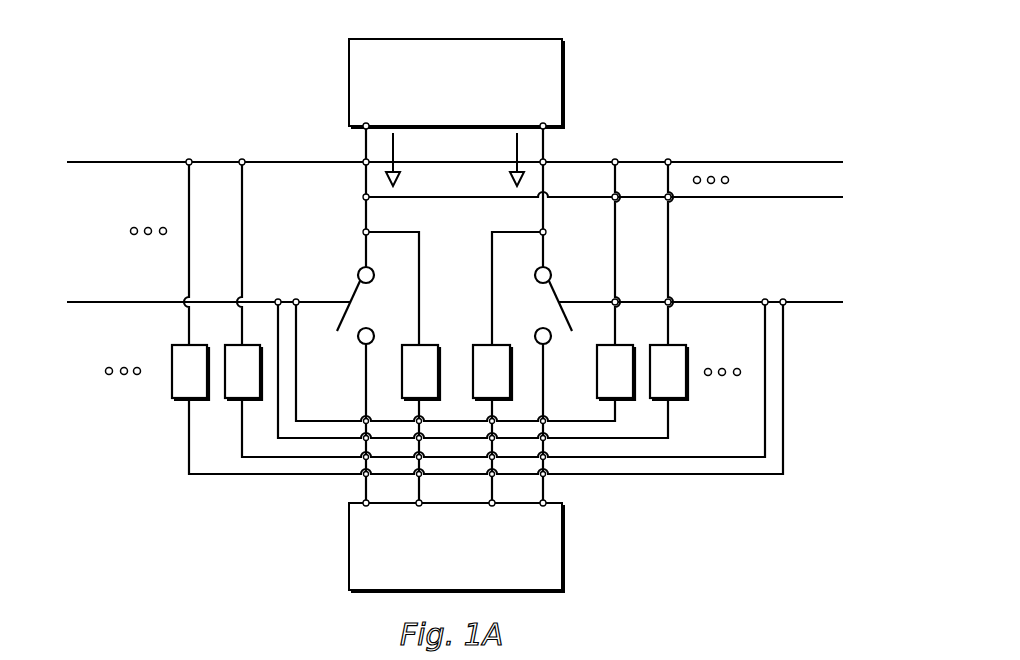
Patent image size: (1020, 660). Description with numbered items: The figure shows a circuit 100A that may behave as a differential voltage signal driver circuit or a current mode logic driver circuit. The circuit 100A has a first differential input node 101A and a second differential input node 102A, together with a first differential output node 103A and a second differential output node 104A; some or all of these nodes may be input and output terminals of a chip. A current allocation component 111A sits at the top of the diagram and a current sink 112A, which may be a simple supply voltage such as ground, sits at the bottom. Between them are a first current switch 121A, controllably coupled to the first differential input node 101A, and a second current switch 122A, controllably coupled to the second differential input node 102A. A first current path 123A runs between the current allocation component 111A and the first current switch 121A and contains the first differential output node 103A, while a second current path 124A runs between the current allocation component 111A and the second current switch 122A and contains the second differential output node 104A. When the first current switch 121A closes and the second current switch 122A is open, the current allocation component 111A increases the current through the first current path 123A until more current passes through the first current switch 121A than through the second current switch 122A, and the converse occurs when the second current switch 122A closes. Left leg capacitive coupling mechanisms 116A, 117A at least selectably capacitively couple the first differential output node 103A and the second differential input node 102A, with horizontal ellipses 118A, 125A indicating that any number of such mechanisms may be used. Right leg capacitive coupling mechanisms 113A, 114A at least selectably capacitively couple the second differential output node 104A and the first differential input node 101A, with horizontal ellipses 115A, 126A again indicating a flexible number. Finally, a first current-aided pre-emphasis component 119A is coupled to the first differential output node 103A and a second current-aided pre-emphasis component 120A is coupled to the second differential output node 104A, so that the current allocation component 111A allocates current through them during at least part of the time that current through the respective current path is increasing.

The circuit 100A is at (480, 28).
The current allocation component 111A is at (547, 95).
The current sink 112A is at (547, 556).
The first differential input node 101A is at (132, 302).
The second differential input node 102A is at (816, 304).
The first differential output node 103A is at (800, 197).
The second differential output node 104A is at (800, 162).
The capacitive coupling mechanism 113A is at (634, 373).
The capacitive coupling mechanism 114A is at (678, 399).
The horizontal ellipses 115A is at (736, 368).
The capacitive coupling mechanism 116A is at (224, 372).
The capacitive coupling mechanism 117A is at (178, 398).
The horizontal ellipses 118A is at (125, 367).
The first current-aided pre-emphasis component 119A is at (427, 345).
The second current-aided pre-emphasis component 120A is at (490, 345).
The first current switch 121A is at (363, 310).
The second current switch 122A is at (546, 310).
The first current path 123A is at (395, 165).
The second current path 124A is at (516, 176).
The horizontal ellipses 125A is at (163, 227).
The horizontal ellipses 126A is at (698, 176).